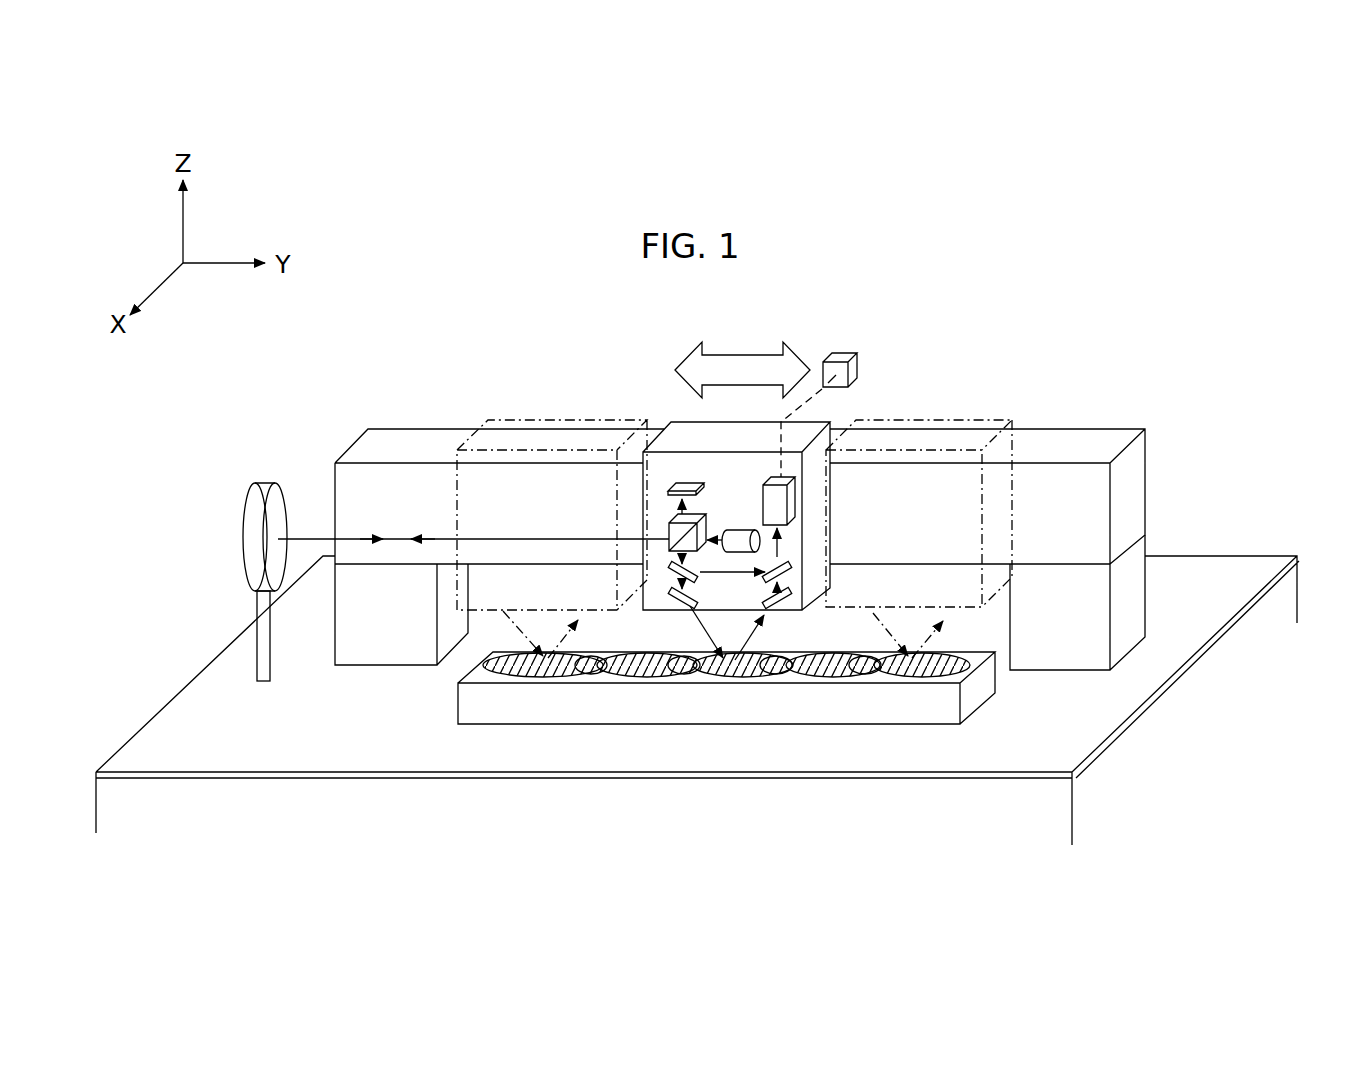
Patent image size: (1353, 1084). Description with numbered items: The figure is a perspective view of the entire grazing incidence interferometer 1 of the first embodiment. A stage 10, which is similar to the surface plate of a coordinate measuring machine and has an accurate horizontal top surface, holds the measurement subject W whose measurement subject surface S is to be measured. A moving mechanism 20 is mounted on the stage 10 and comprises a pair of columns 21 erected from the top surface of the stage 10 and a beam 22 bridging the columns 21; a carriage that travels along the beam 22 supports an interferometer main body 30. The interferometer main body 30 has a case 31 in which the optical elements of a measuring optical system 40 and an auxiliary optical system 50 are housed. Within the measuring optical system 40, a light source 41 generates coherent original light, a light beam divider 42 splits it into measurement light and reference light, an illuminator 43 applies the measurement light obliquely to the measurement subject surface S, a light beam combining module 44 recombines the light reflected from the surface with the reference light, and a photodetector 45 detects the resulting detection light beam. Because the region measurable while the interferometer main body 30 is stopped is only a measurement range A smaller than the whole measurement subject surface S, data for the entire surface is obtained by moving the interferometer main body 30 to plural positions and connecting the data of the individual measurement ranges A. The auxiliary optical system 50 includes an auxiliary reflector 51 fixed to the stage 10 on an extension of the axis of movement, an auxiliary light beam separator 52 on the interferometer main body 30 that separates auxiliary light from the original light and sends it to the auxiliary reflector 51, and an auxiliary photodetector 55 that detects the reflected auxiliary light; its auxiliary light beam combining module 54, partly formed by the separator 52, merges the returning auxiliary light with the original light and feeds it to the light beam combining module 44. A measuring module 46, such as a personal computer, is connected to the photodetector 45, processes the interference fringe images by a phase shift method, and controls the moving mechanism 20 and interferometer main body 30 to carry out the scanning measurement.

The grazing incidence interferometer 1 is at (486, 264).
The stage 10 is at (157, 732).
The moving mechanism 20 is at (1143, 414).
The columns 21 is at (370, 650).
The beam 22 is at (1070, 432).
The interferometer main body 30 is at (666, 386).
The case 31 is at (685, 435).
The measuring optical system 40 is at (782, 627).
The light source 41 is at (737, 528).
The light beam divider 42 is at (667, 580).
The illuminator 43 is at (672, 605).
The light beam combining module 44 is at (796, 571).
The photodetector 45 is at (792, 498).
The measuring module 46 is at (840, 353).
The auxiliary optical system 50 is at (657, 519).
The auxiliary reflector 51 is at (242, 503).
The auxiliary light beam separator 52 is at (664, 534).
The auxiliary light beam combining module 54 is at (687, 532).
The auxiliary photodetector 55 is at (691, 472).
The measurement range A is at (633, 676).
The measurement subject surface S is at (472, 666).
The measurement subject W is at (567, 712).